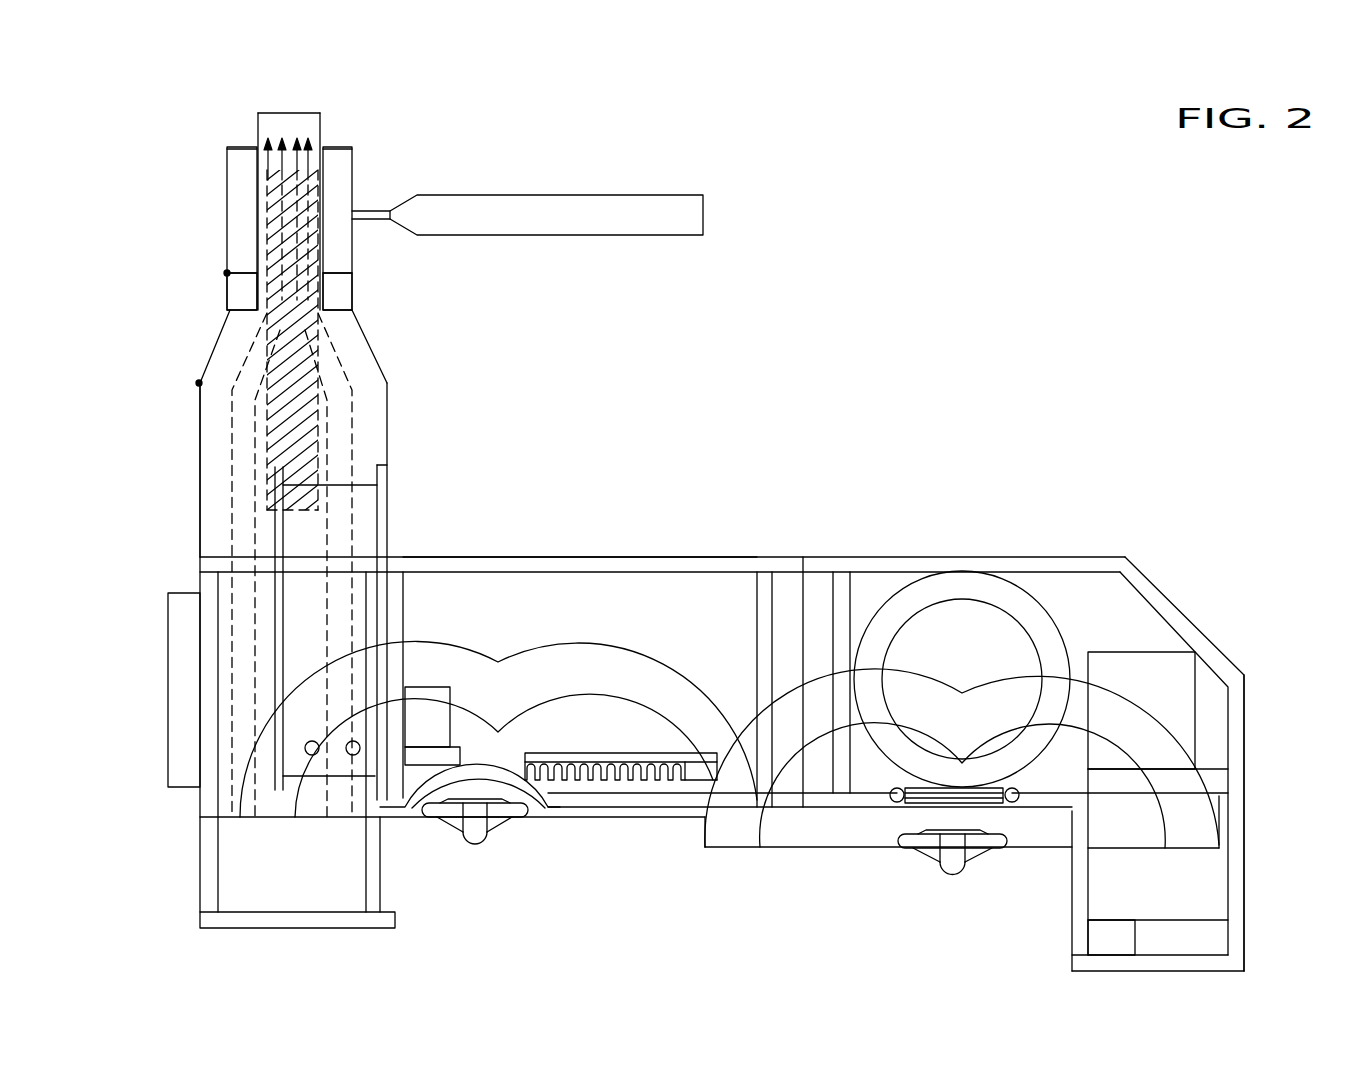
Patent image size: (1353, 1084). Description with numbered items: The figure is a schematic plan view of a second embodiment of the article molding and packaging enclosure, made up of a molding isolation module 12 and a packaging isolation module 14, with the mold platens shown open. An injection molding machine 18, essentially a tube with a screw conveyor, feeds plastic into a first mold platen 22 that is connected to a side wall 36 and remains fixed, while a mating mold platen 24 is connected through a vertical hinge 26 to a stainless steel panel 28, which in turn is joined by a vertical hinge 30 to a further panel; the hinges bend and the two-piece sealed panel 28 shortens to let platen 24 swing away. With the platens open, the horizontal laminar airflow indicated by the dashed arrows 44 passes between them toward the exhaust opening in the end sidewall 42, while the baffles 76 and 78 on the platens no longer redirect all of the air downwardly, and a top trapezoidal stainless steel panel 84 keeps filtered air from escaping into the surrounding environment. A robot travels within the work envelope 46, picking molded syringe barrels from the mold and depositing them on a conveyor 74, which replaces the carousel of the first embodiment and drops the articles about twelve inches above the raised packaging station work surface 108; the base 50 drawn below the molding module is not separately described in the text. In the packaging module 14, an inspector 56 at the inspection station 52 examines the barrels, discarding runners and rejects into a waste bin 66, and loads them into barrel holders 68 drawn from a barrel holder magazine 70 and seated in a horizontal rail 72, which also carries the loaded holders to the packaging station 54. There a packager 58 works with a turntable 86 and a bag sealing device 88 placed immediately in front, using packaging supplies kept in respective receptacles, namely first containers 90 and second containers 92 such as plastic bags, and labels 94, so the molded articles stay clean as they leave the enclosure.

The molding isolation module 12 is at (467, 415).
The packaging isolation module 14 is at (980, 450).
The injection molding machine 18 is at (560, 196).
The first mold platen 22 is at (348, 160).
The mating mold platen 24 is at (227, 195).
The vertical hinge 26 is at (227, 273).
The stainless steel panel 28 is at (212, 335).
The vertical hinge 30 is at (198, 383).
The side wall 36 is at (367, 318).
The end sidewall 42 is at (326, 200).
The flow arrows 44 is at (294, 132).
The work envelope 46 is at (317, 352).
The base 50 is at (258, 863).
The inspection station 52 is at (590, 543).
The packaging station 54 is at (1170, 734).
The inspector 56 is at (475, 856).
The packager 58 is at (953, 889).
The waste bin 66 is at (438, 671).
The barrel holders 68 is at (562, 778).
The barrel holder magazine 70 is at (468, 726).
The horizontal rail 72 is at (621, 727).
The conveyor 74 is at (388, 522).
The baffle 76 is at (233, 298).
The baffle 78 is at (348, 290).
The top trapezoidal stainless steel panel 84 is at (482, 828).
The turntable 86 is at (978, 647).
The bag sealing device 88 is at (969, 770).
The first containers 90 is at (1179, 674).
The second containers 92 is at (1190, 885).
The labels 94 is at (1112, 946).
The packaging station work surface 108 is at (1258, 800).